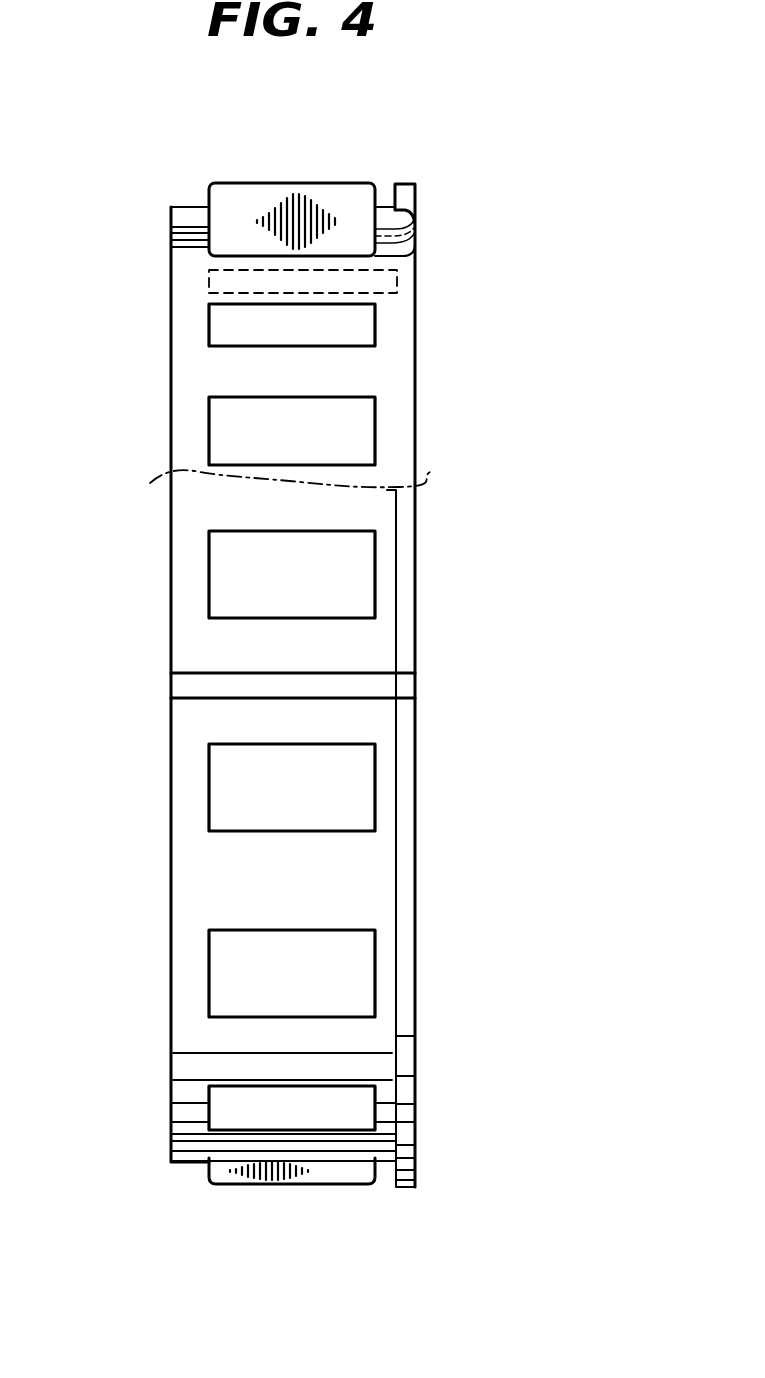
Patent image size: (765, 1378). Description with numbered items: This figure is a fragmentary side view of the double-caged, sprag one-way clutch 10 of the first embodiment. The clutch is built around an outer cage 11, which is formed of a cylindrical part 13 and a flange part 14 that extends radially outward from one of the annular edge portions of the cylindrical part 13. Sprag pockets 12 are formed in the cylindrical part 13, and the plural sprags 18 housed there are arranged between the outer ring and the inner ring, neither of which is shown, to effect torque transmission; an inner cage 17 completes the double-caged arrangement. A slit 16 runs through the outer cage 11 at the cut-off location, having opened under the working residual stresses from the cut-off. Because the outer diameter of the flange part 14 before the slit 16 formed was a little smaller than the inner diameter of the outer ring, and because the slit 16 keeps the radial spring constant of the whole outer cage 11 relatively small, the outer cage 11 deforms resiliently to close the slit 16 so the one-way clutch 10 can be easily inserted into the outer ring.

The one-way clutch 10 is at (206, 1210).
The outer cage 11 is at (415, 923).
The sprag pockets 12 is at (267, 983).
The cylindrical part 13 is at (192, 630).
The flange part 14 is at (405, 816).
The slit 16 is at (373, 688).
The inner cage 17 is at (185, 323).
The sprags 18 is at (298, 183).